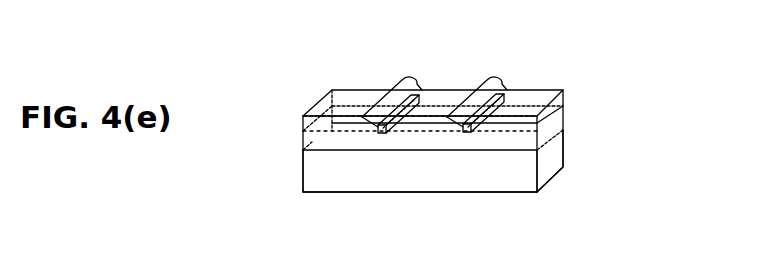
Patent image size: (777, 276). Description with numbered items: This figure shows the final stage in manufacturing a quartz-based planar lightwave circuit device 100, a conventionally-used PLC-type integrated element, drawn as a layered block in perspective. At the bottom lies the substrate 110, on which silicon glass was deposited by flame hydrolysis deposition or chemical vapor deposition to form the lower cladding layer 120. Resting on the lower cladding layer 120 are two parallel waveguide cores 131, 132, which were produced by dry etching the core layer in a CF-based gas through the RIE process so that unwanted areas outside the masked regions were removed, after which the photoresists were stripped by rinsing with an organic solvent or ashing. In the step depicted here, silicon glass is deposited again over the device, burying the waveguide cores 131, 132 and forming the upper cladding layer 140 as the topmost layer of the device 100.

The quartz-based planar lightwave circuit device 100 is at (514, 145).
The substrate 110 is at (553, 158).
The lower cladding layer 120 is at (553, 127).
The upper cladding layer 140 is at (551, 105).
The waveguide core 131 is at (413, 103).
The waveguide core 132 is at (498, 103).